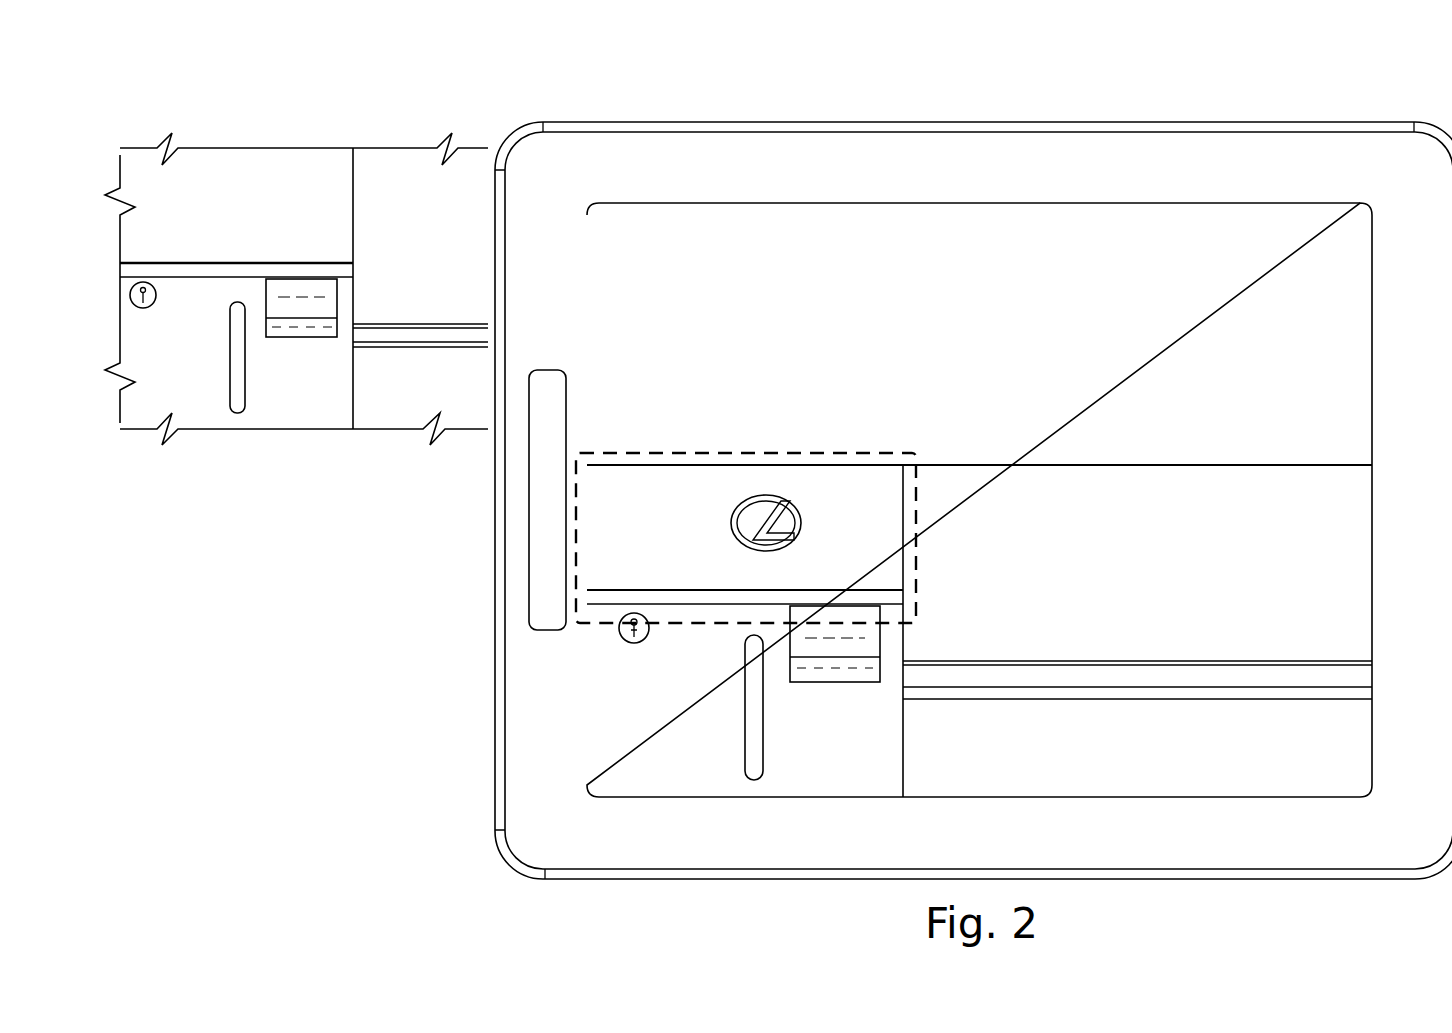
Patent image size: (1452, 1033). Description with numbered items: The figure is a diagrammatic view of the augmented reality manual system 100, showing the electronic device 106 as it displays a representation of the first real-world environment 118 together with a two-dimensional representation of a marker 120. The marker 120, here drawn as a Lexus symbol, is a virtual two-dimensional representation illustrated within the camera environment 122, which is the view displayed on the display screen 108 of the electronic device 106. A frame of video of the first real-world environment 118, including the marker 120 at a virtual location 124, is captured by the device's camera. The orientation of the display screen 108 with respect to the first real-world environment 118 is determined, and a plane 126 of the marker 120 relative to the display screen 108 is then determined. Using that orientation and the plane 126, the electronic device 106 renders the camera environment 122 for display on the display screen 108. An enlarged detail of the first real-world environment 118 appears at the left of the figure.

The augmented reality manual system 100 is at (1191, 90).
The electronic device 106 is at (978, 143).
The display screen 108 is at (1028, 213).
The first real-world environment 118 is at (268, 145).
The two-dimensional representation of a marker 120 is at (728, 526).
The camera environment 122 is at (861, 198).
The virtual location 124 is at (706, 513).
The plane 126 is at (716, 448).